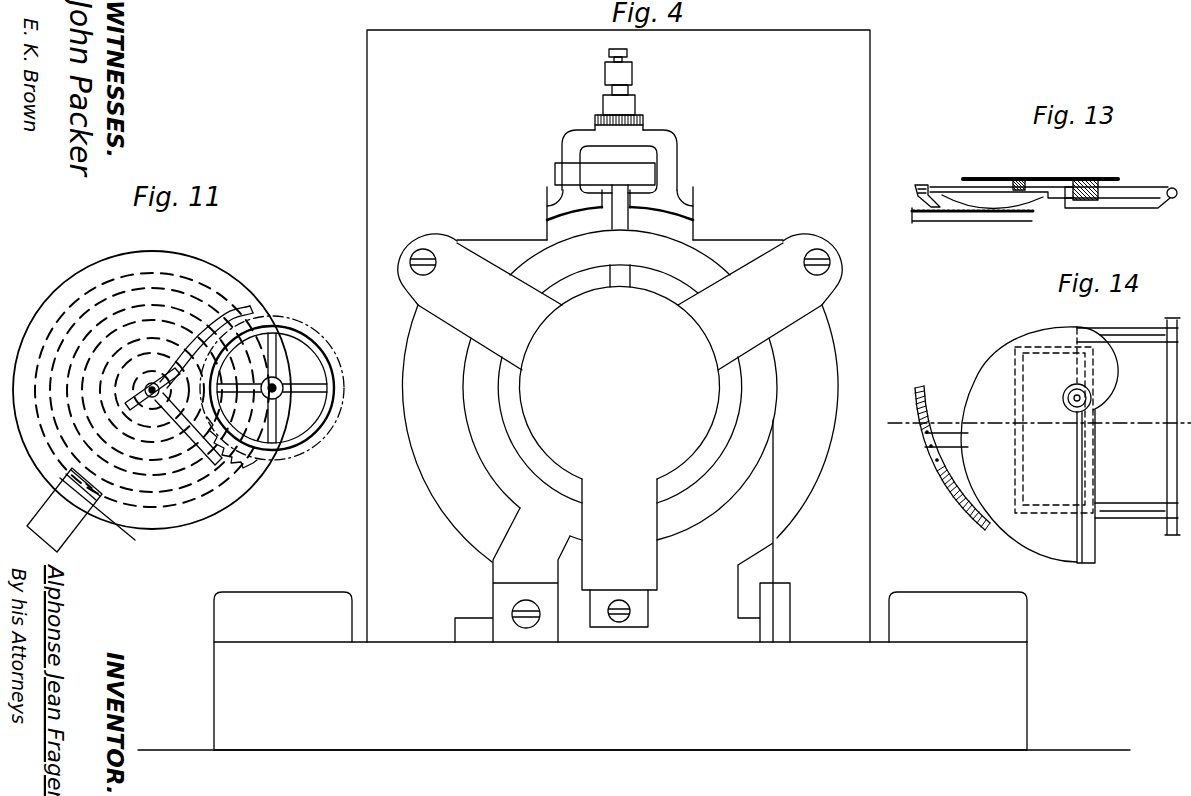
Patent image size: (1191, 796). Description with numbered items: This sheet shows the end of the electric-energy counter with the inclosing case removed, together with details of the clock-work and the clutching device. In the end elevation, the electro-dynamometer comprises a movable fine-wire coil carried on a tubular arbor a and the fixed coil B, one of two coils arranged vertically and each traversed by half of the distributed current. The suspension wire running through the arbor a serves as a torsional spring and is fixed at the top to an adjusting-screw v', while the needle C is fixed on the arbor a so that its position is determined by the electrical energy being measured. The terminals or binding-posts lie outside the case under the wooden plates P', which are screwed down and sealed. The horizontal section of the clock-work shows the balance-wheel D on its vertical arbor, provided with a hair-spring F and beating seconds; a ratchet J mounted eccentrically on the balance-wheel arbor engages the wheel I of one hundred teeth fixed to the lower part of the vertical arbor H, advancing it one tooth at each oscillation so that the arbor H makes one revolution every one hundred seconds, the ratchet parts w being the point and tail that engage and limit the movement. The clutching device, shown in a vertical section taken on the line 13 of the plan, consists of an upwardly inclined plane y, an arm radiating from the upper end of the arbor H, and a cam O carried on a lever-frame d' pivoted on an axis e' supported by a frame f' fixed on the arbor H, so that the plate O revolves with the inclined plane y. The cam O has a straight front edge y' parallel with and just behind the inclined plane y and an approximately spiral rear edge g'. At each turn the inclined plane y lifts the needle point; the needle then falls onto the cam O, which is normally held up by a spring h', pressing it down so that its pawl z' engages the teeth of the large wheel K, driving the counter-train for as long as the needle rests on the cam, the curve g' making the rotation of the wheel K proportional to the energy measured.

In FIG. 4, the fixed coil B is at (620, 436).
In FIG. 4, the needle C is at (616, 159).
In FIG. 4, the tubular arbor a is at (619, 207).
In FIG. 4, the adjusting-screw v' is at (619, 85).
In FIG. 4, the wooden plates P' is at (620, 617).
In FIG. 11, the balance-wheel D is at (152, 390).
In FIG. 11, the toothed wheel I is at (272, 388).
In FIG. 11, the lever arm w is at (191, 385).
In FIG. 11, the ratchet J is at (173, 444).
In FIG. 11, the hair-spring F is at (81, 512).
In FIG. 13, the cam O is at (1040, 170).
In FIG. 14, the cam O is at (1019, 444).
In FIG. 13, the inclined plane y is at (1061, 177).
In FIG. 14, the inclined plane y is at (1096, 445).
In FIG. 14, the straight front edge y' is at (1060, 483).
In FIG. 13, the spring h' is at (1001, 211).
In FIG. 13, the pawl z' is at (914, 197).
In FIG. 14, the pawl z' is at (936, 458).
In FIG. 13, the large wheel K is at (972, 224).
In FIG. 14, the large wheel K is at (952, 462).
In FIG. 13, the frame f' is at (1116, 180).
In FIG. 14, the frame f' is at (1116, 434).
In FIG. 13, the lever-frame d' is at (1117, 217).
In FIG. 14, the lever-frame d' is at (1073, 429).
In FIG. 13, the axis e' is at (1174, 207).
In FIG. 14, the axis e' is at (1159, 468).
In FIG. 14, the spiral rear edge g' is at (1035, 368).
In FIG. 14, the vertical arbor H is at (1062, 398).
In FIG. 14, the section line 13 is at (1039, 417).